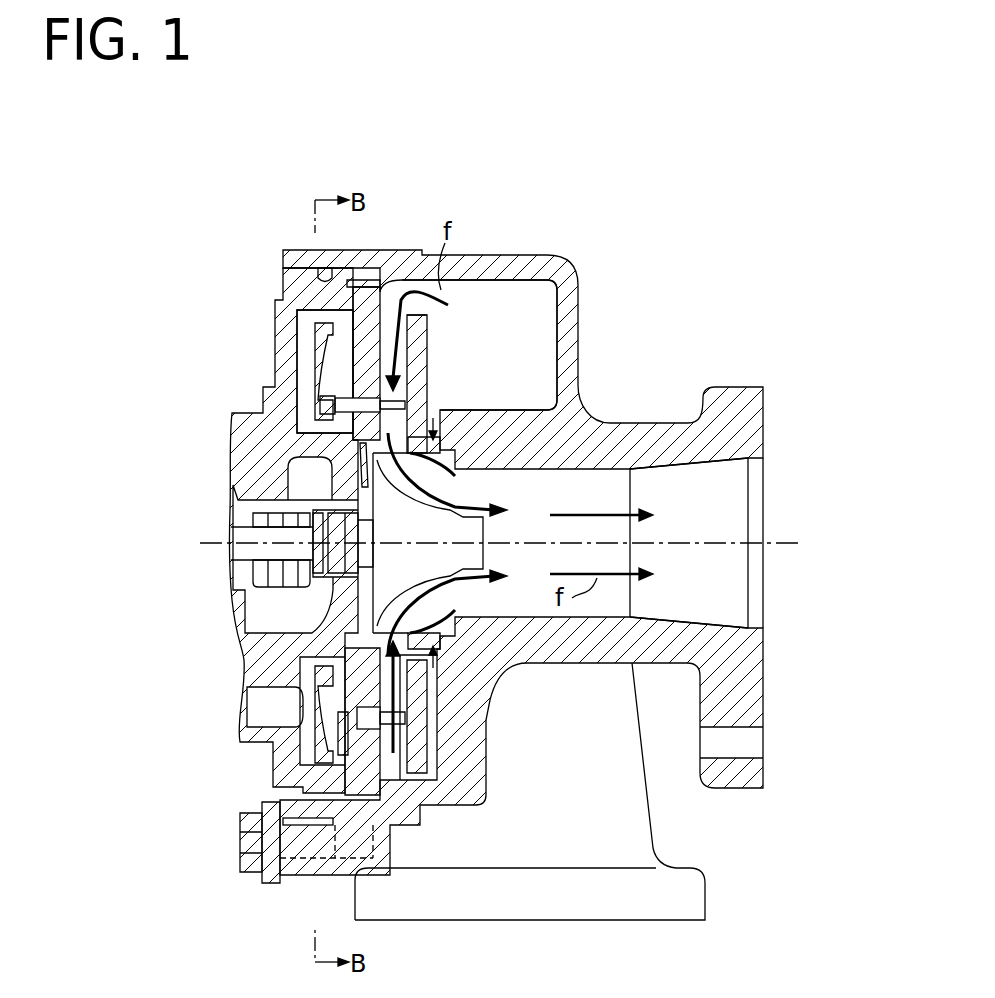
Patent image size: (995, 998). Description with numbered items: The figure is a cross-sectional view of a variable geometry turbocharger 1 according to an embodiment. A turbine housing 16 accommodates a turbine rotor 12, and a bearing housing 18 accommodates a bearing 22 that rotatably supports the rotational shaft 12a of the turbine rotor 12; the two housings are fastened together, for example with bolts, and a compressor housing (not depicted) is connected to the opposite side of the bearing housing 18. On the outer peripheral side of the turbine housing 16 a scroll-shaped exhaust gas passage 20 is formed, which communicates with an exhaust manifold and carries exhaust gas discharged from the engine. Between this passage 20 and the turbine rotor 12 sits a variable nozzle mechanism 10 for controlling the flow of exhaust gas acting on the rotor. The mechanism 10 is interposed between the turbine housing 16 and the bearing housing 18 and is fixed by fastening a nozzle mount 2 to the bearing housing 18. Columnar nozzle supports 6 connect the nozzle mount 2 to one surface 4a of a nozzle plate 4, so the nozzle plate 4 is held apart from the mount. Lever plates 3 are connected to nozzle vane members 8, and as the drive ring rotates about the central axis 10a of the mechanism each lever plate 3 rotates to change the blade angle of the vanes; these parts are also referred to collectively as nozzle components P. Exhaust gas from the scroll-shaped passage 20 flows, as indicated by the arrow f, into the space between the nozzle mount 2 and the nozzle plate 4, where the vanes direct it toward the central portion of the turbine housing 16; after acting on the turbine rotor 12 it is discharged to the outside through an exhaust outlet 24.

The variable geometry turbocharger 1 is at (221, 211).
The nozzle mount 2 is at (371, 316).
The lever plate 3 is at (322, 373).
The nozzle plate 4 is at (418, 348).
The one surface of the nozzle plate 4a is at (423, 327).
The nozzle support 6 is at (400, 747).
The nozzle vane member 8 is at (398, 395).
The variable nozzle mechanism 10 is at (298, 348).
The central axis of the variable nozzle mechanism 10a is at (788, 542).
The turbine rotor 12 is at (437, 484).
The rotational shaft 12a is at (245, 553).
The turbine housing 16 is at (560, 264).
The bearing housing 18 is at (241, 444).
The scroll-shaped exhaust gas passage 20 is at (538, 310).
The bearing 22 is at (278, 566).
The exhaust outlet 24 is at (718, 478).